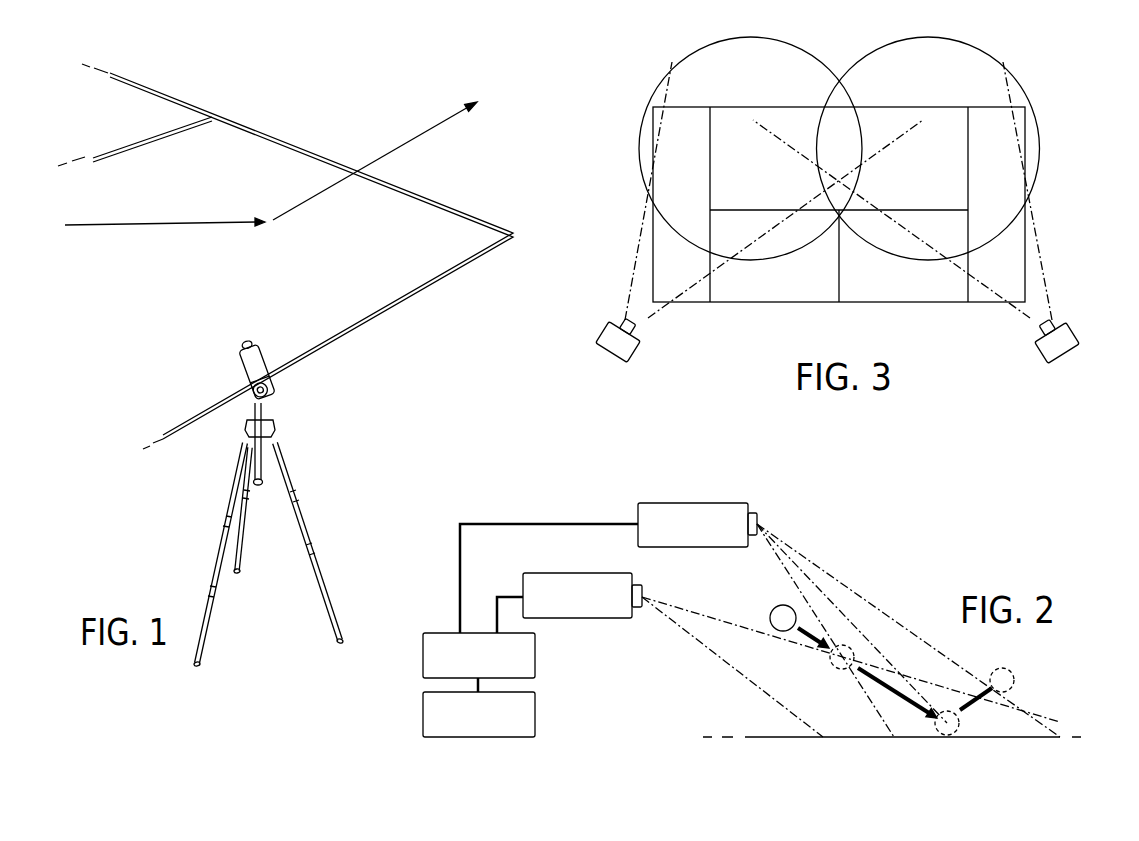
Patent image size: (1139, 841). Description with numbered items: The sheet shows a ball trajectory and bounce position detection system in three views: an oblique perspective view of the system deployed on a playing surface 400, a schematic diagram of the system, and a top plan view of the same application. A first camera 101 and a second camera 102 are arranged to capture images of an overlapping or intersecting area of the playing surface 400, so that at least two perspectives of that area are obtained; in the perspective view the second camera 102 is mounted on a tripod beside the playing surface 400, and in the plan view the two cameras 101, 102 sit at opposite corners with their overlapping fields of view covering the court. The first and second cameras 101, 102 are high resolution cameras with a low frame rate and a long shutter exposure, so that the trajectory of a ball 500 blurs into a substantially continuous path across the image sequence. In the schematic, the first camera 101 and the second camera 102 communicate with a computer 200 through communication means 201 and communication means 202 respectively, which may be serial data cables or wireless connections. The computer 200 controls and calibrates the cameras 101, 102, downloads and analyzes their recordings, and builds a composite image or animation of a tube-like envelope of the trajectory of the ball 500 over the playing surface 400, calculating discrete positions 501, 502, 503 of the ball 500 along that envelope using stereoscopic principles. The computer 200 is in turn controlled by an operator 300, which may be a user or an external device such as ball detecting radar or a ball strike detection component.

In FIG. 3, the first camera 101 is at (613, 355).
In FIG. 2, the first camera 101 is at (752, 508).
In FIG. 1, the second camera 102 is at (270, 383).
In FIG. 3, the second camera 102 is at (1043, 357).
In FIG. 2, the second camera 102 is at (633, 580).
In FIG. 2, the computer 200 is at (535, 655).
In FIG. 2, the communication means 201 is at (527, 523).
In FIG. 2, the communication means 202 is at (512, 595).
In FIG. 2, the operator 300 is at (535, 715).
In FIG. 1, the playing surface 400 is at (403, 298).
In FIG. 3, the playing surface 400 is at (763, 303).
In FIG. 2, the playing surface 400 is at (760, 737).
In FIG. 2, the ball 500 is at (770, 611).
In FIG. 2, the position 501 is at (855, 653).
In FIG. 2, the position 502 is at (933, 723).
In FIG. 2, the position 503 is at (1015, 678).